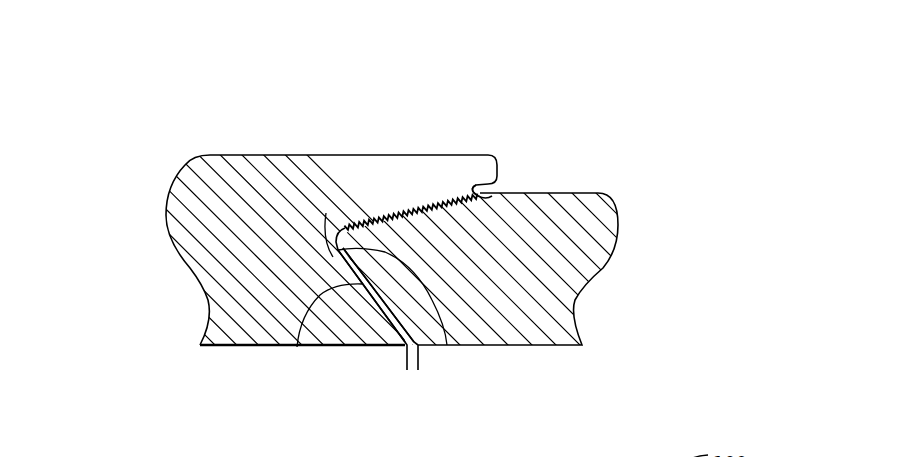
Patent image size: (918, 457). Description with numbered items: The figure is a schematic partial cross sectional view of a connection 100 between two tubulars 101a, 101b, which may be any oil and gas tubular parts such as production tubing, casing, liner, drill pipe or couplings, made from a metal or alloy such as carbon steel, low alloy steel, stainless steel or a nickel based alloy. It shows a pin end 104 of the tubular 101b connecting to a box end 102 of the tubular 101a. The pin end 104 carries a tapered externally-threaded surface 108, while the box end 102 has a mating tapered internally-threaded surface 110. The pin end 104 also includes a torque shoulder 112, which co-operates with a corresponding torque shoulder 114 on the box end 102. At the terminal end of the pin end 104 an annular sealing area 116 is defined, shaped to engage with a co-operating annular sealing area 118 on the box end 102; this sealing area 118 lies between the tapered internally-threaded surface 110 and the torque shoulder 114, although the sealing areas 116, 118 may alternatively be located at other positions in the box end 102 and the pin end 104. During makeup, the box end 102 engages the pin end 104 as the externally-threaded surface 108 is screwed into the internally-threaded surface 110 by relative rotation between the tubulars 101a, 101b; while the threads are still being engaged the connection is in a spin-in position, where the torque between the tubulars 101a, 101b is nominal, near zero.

The connection 100 is at (664, 57).
The tubular 101a is at (160, 160).
The tubular 101b is at (638, 180).
The box end 102 is at (250, 212).
The pin end 104 is at (568, 193).
The tapered externally-threaded surface 108 is at (503, 193).
The tapered internally-threaded surface 110 is at (412, 200).
The torque shoulder 112 is at (370, 345).
The torque shoulder 114 is at (297, 347).
The annular sealing area 116 is at (447, 345).
The annular sealing area 118 is at (326, 213).